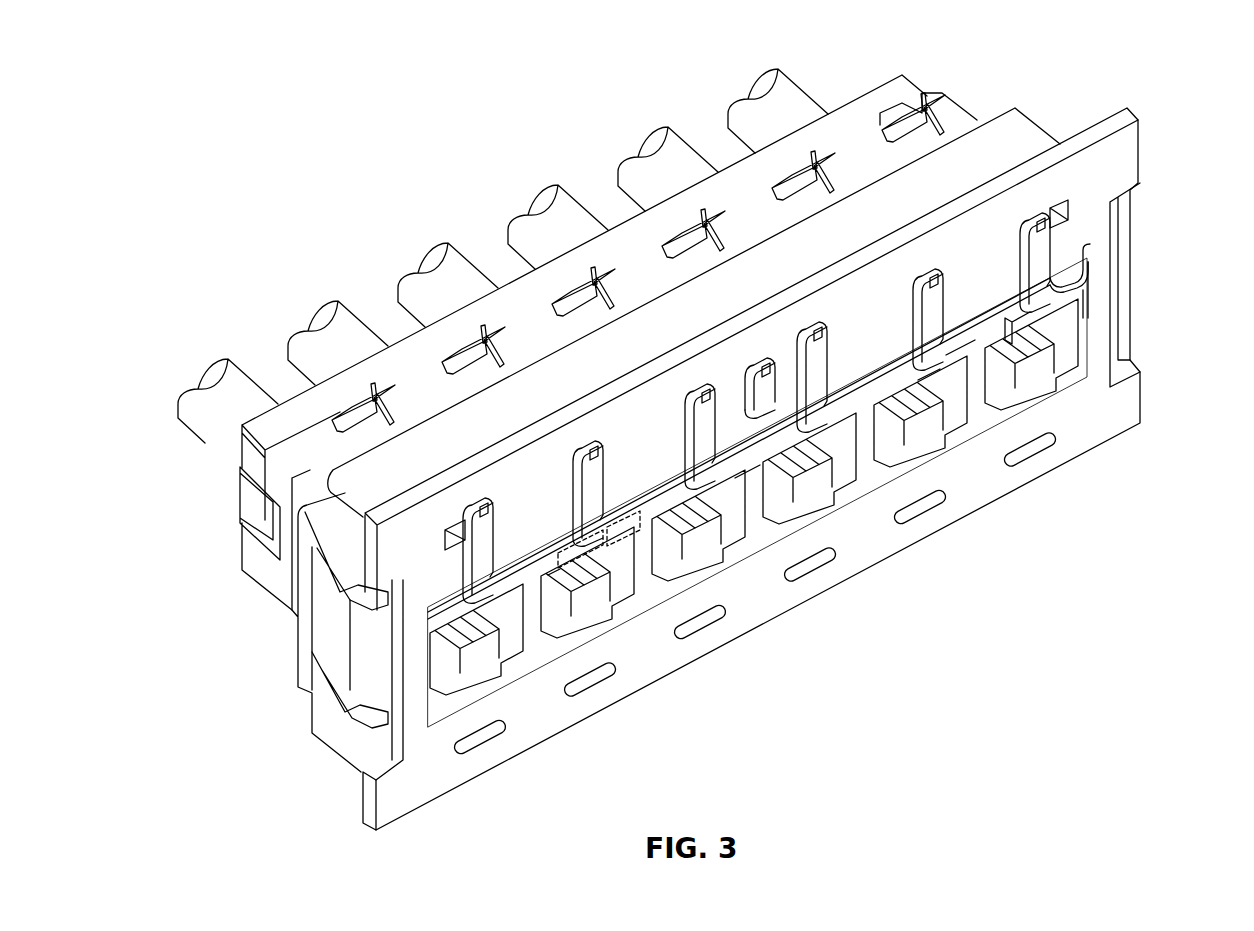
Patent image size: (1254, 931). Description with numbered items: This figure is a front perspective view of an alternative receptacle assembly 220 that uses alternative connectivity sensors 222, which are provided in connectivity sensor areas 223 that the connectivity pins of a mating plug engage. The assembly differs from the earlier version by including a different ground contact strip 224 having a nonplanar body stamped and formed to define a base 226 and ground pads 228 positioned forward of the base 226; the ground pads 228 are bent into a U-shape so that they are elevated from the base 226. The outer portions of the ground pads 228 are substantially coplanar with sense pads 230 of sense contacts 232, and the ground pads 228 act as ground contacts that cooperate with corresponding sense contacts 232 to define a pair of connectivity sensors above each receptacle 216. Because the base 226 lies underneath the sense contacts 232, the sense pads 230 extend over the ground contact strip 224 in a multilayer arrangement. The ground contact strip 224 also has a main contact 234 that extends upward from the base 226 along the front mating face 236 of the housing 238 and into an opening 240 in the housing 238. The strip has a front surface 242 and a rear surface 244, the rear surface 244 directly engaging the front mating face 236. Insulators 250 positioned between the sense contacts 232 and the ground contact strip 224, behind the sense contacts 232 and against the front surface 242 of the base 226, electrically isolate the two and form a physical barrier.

The receptacle assembly 220 is at (190, 152).
The housing 238 is at (1014, 128).
The front mating face 236 is at (1125, 153).
The receptacle 216 is at (690, 578).
The base 226 is at (973, 343).
The sense contacts 232 is at (927, 306).
The opening 240 is at (754, 368).
The main contact 234 is at (742, 400).
The rear surface 244 is at (1083, 258).
The ground contact strip 224 is at (1100, 283).
The front surface 242 is at (1087, 293).
The ground pads 228 is at (960, 357).
The sense pads 230 is at (923, 377).
The insulators 250 is at (745, 470).
The connectivity sensors 222 is at (630, 553).
The connectivity sensor areas 223 is at (559, 590).